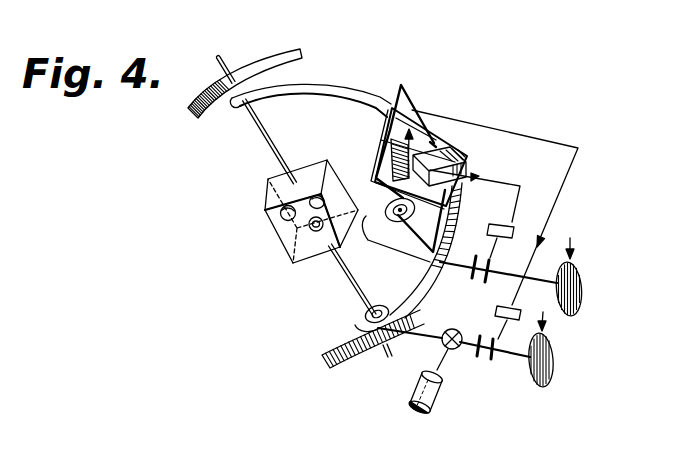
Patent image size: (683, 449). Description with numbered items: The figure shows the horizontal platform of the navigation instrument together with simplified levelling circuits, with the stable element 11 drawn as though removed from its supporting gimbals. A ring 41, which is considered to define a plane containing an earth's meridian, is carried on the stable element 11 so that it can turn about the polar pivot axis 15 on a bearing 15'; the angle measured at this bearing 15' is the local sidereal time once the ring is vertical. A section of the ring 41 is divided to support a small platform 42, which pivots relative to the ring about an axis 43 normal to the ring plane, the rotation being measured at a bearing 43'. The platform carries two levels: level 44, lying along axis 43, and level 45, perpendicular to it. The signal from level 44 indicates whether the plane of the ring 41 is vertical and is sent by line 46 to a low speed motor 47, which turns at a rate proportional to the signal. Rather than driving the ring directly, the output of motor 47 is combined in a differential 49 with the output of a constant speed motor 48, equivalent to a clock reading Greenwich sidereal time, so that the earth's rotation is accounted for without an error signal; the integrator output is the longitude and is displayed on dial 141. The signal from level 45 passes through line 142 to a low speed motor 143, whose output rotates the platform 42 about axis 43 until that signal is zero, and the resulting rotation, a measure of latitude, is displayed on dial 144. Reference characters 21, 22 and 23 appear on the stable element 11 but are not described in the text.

The stable element 11 is at (283, 244).
The pivot axis 15 is at (245, 104).
The bearing 15' is at (373, 329).
The opening 21 is at (322, 196).
The opening 22 is at (280, 217).
The opening 23 is at (320, 231).
The ring 41 is at (344, 88).
The platform 42 is at (465, 157).
The axis 43 is at (425, 168).
The bearing 43' is at (412, 250).
The level 44 is at (390, 153).
The level 45 is at (439, 164).
The line 46 is at (565, 195).
The low speed motor 47 is at (508, 306).
The constant speed motor 48 is at (441, 397).
The differential 49 is at (453, 329).
The dial 141 is at (554, 358).
The line 142 is at (500, 184).
The low speed motor 143 is at (499, 222).
The dial 144 is at (584, 291).